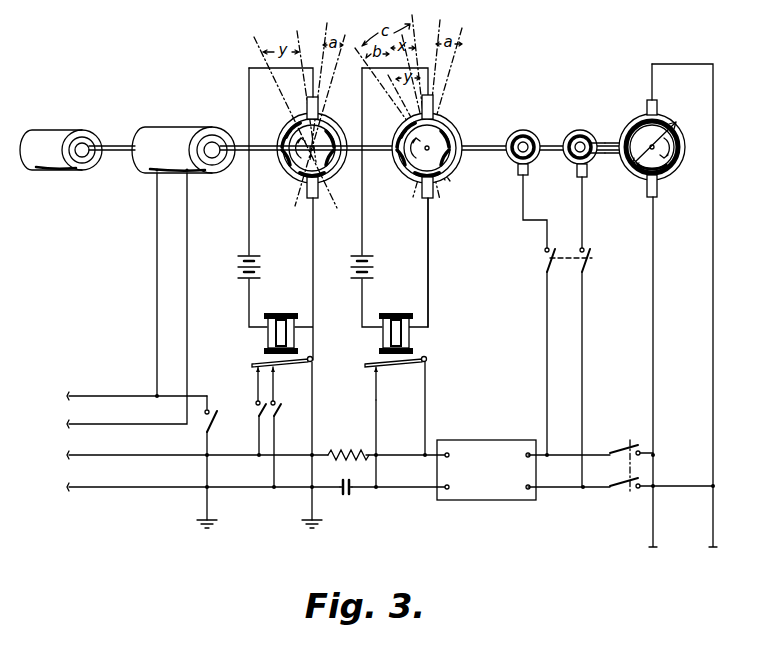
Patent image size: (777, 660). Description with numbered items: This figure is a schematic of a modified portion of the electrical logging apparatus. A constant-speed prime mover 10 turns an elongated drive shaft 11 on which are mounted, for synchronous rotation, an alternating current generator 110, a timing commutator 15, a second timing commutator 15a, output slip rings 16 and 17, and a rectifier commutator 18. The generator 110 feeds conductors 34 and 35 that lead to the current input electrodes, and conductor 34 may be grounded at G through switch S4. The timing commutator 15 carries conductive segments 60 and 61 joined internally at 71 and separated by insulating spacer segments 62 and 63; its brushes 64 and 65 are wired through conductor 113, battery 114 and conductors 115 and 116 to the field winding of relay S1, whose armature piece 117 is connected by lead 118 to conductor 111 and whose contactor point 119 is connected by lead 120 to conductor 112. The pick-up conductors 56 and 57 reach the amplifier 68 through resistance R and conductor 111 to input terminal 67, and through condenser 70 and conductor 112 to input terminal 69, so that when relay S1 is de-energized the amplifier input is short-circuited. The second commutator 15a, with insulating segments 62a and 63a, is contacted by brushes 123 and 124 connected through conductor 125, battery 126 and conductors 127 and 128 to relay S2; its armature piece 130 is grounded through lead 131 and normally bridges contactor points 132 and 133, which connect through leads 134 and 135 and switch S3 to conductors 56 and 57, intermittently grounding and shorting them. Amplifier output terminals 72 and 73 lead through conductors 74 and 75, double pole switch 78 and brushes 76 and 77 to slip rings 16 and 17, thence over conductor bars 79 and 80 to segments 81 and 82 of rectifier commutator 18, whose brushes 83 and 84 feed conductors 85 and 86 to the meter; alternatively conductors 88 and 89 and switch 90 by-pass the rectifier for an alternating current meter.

The prime mover 10 is at (68, 128).
The drive shaft 11 is at (115, 145).
The alternating current generator 110 is at (177, 126).
The second timing commutator 15a is at (295, 187).
The insulating segment 63a is at (302, 118).
The brush 123 is at (318, 100).
The brush 124 is at (308, 190).
The insulating segment 62a is at (326, 186).
The conductor 125 is at (248, 220).
The battery 126 is at (238, 266).
The conductor 127 is at (248, 291).
The conductor 128 is at (313, 283).
The electromagnetic relay S2 is at (256, 341).
The armature piece 130 is at (306, 356).
The lead 131 is at (312, 378).
The contactor point 132 is at (256, 368).
The contactor point 133 is at (269, 381).
The lead 134 is at (255, 397).
The switch S3 is at (262, 418).
The conductor 113 is at (364, 236).
The battery 114 is at (375, 264).
The conductor 115 is at (364, 290).
The conductor 116 is at (430, 265).
The electromagnetic relay S1 is at (422, 353).
The relay contactor point 119 is at (370, 373).
The lead 118 is at (427, 393).
The armature piece 117 is at (380, 370).
The lead 120 is at (378, 398).
The conductor 34 is at (108, 392).
The conductor 35 is at (100, 423).
The conductor 56 is at (100, 455).
The conductor 57 is at (104, 487).
The lead 135 is at (272, 480).
The switch S4 is at (204, 420).
The ground G is at (196, 528).
The resistance R is at (350, 448).
The conductor 111 is at (412, 452).
The condenser 70 is at (348, 496).
The conductor 112 is at (405, 490).
The amplifier 68 is at (486, 470).
The input terminal 67 is at (449, 450).
The output terminal 72 is at (528, 450).
The input terminal 69 is at (450, 490).
The output terminal 73 is at (526, 490).
The conductor 75 is at (558, 489).
The conductor 74 is at (546, 340).
The conductor 89 is at (590, 489).
The conductor 88 is at (602, 450).
The switch 90 is at (630, 490).
The conductor 86 is at (656, 532).
The conductor 85 is at (716, 522).
The timing commutator 15 is at (459, 106).
The commutator segment 61 is at (462, 139).
The commutator segment 60 is at (404, 168).
The insulating spacer segment 63 is at (410, 120).
The brush 64 is at (432, 100).
The insulating spacer segment 62 is at (442, 180).
The internal connection 71 is at (421, 185).
The brush 65 is at (434, 197).
The output slip ring 16 is at (522, 128).
The brush 76 is at (521, 176).
The output slip ring 17 is at (580, 128).
The brush 77 is at (580, 178).
The double pole switch 78 is at (590, 262).
The conductor bar 79 is at (600, 156).
The conductor bar 80 is at (606, 141).
The rectifier commutator 18 is at (631, 107).
The brush 83 is at (656, 102).
The commutator segment 82 is at (683, 132).
The commutator segment 81 is at (640, 176).
The brush 84 is at (658, 195).